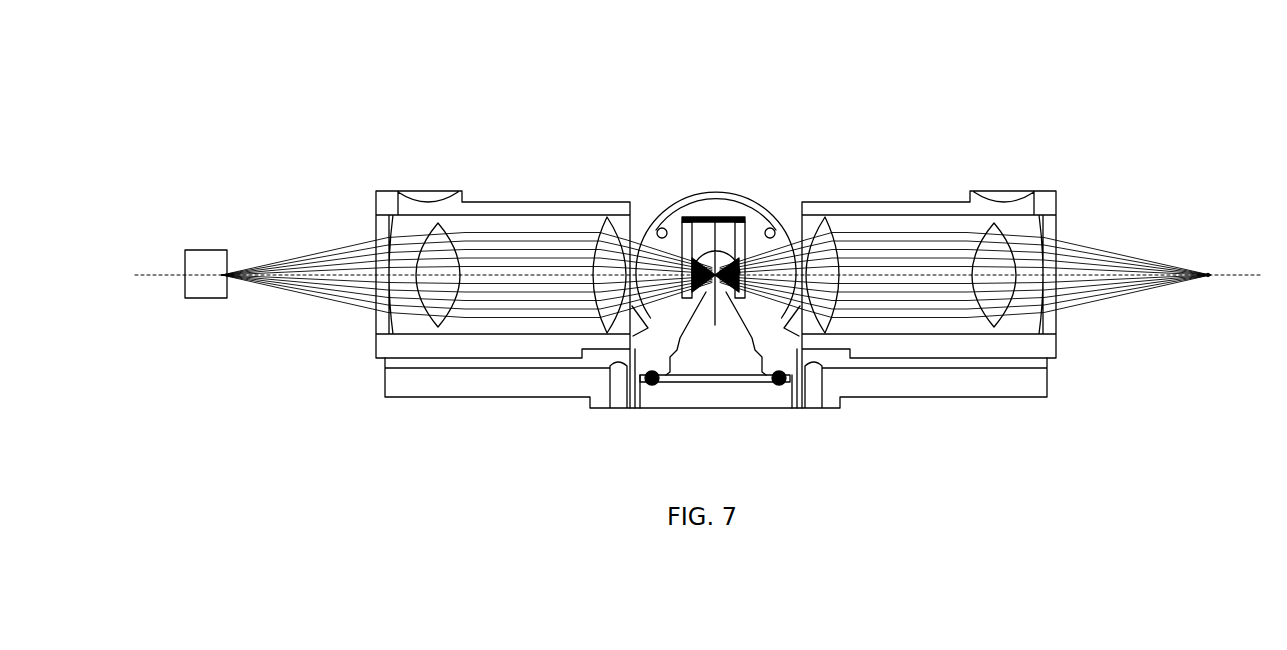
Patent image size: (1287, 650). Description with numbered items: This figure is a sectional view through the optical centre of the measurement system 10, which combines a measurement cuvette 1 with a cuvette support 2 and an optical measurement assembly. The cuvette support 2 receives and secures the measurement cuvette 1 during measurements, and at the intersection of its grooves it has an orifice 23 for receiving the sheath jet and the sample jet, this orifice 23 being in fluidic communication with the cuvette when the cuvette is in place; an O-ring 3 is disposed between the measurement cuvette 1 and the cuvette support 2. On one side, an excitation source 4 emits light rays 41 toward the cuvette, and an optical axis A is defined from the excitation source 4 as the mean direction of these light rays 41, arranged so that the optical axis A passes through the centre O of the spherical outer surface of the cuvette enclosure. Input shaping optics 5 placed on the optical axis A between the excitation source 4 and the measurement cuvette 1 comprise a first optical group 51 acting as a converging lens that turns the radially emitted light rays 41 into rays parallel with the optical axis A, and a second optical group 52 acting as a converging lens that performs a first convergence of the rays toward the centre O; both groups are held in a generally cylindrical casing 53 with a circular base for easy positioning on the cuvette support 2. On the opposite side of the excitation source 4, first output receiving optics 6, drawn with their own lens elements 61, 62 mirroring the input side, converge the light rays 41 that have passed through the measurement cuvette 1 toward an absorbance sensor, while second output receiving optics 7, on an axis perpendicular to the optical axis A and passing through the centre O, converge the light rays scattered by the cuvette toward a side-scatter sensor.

The measurement system 10 is at (988, 75).
The excitation source 4 is at (205, 248).
The light rays 41 is at (338, 245).
The input shaping optics 5 is at (383, 190).
The first optical group 51 is at (437, 228).
The second optical group 52 is at (607, 237).
The casing 53 is at (530, 202).
The first output receiving optics 6 is at (1036, 192).
The third lens 61 is at (987, 225).
The fourth lens 62 is at (818, 227).
The second output receiving optics 7 is at (697, 193).
The centre of the spherical outer surface O is at (745, 218).
The measurement cuvette 1 is at (650, 348).
The cuvette support 2 is at (1025, 387).
The orifice 23 is at (708, 383).
The O-ring 3 is at (781, 385).
The optical axis A is at (1232, 272).